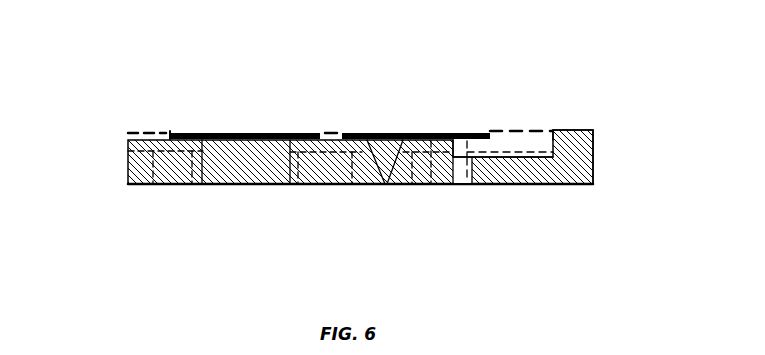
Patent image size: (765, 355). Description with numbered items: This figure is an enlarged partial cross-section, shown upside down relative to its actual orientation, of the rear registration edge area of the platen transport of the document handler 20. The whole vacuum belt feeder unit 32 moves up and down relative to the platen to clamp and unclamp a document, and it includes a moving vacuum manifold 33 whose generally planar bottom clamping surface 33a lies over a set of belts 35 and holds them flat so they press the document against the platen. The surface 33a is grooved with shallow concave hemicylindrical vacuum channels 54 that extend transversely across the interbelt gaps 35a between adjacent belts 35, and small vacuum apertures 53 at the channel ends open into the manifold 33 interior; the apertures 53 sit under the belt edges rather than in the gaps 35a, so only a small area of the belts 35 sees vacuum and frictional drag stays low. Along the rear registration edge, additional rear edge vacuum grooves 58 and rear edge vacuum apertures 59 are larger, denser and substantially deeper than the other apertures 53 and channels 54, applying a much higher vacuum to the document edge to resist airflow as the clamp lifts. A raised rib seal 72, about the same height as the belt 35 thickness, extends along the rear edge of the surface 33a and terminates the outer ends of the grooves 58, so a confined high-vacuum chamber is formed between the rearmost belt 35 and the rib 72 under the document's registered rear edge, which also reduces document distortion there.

The document handler 20 is at (124, 98).
The vacuum belt feeder unit 32 is at (239, 218).
The vacuum manifold 33 is at (283, 186).
The clamping surface 33a is at (386, 186).
The belts 35 is at (223, 132).
The interbelt gaps 35a is at (168, 132).
The vacuum apertures 53 is at (187, 190).
The vacuum channels 54 is at (368, 128).
The rear edge vacuum grooves 58 is at (518, 143).
The rear edge vacuum apertures 59 is at (458, 160).
The rib seal 72 is at (588, 128).